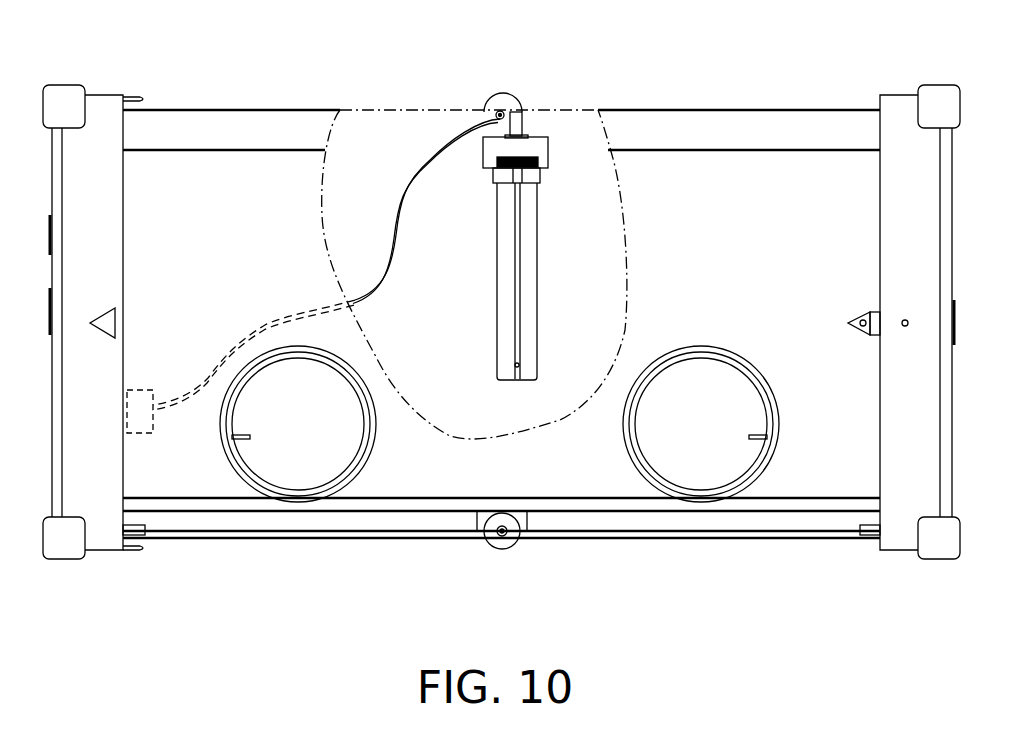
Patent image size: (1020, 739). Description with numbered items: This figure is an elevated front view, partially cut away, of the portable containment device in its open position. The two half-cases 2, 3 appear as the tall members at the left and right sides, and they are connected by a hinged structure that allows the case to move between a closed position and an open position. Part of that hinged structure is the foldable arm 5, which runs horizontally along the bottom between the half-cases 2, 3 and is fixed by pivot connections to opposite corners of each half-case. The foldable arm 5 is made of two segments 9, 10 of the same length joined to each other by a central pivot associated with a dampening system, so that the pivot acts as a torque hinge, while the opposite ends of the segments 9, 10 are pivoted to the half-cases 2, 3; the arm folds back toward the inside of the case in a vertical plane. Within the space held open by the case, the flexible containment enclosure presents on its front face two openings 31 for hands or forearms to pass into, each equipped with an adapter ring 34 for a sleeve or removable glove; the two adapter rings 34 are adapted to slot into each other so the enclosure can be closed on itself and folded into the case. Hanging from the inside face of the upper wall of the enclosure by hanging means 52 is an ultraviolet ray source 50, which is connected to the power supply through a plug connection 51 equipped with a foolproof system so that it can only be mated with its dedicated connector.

The half-case 2 is at (100, 118).
The half-case 3 is at (900, 118).
The foldable arm 5 is at (458, 541).
The segment 9 is at (778, 518).
The segment 10 is at (315, 518).
The opening 31 is at (285, 440).
The adapter ring 34 is at (372, 455).
The ultraviolet ray source 50 is at (532, 222).
The plug connection 51 is at (148, 435).
The hanging means 52 is at (537, 125).